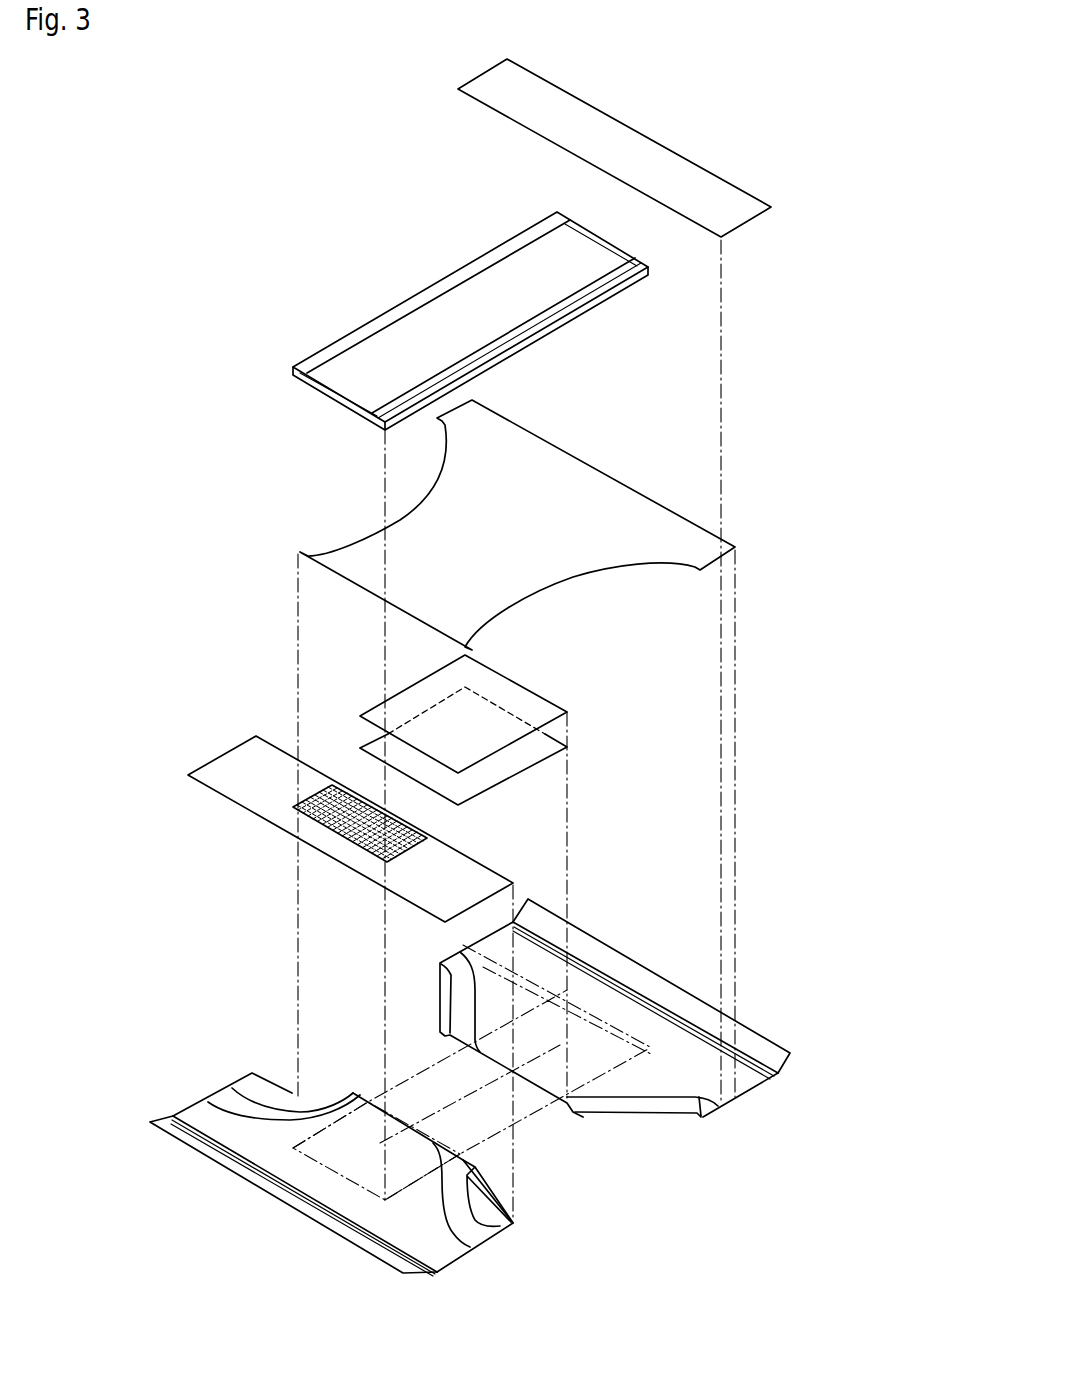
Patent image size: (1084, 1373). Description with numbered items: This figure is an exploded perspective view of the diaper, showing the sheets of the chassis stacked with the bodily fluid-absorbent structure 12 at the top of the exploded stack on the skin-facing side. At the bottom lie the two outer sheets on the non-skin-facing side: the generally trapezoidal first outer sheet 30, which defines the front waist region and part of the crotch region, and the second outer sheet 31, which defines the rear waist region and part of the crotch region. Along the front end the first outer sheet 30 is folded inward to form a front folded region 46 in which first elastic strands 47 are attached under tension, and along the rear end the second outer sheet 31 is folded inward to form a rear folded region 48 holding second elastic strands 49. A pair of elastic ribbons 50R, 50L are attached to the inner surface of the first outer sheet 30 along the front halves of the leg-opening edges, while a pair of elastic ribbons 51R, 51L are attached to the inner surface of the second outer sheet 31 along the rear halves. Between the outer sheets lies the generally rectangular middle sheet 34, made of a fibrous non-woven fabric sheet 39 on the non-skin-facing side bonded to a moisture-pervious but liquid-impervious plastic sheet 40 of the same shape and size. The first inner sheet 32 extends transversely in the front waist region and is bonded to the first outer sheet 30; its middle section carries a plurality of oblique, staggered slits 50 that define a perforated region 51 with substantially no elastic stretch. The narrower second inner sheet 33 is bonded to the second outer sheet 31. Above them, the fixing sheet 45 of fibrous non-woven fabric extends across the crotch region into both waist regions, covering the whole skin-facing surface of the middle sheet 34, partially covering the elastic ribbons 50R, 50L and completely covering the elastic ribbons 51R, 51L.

The second inner sheet 33 is at (570, 112).
The bodily fluid-absorbent structure 12 is at (587, 331).
The fixing sheet 45 is at (570, 475).
The middle sheet 34 is at (522, 730).
The plastic sheet 40 is at (533, 707).
The fibrous non-woven fabric sheet 39 is at (545, 740).
The first inner sheet 32 is at (341, 817).
The perforated region 51 is at (327, 841).
The slits 50 is at (352, 832).
The second outer sheet 31 is at (588, 1027).
The rear folded region 48 is at (687, 1000).
The second elastic strands 49 is at (602, 968).
The elastic ribbon 51R is at (458, 1018).
The elastic ribbon 51L is at (638, 1102).
The first outer sheet 30 is at (363, 1162).
The front folded region 46 is at (268, 1188).
The first elastic strands 47 is at (350, 1212).
The elastic ribbon 50R is at (270, 1100).
The elastic ribbon 50L is at (468, 1227).